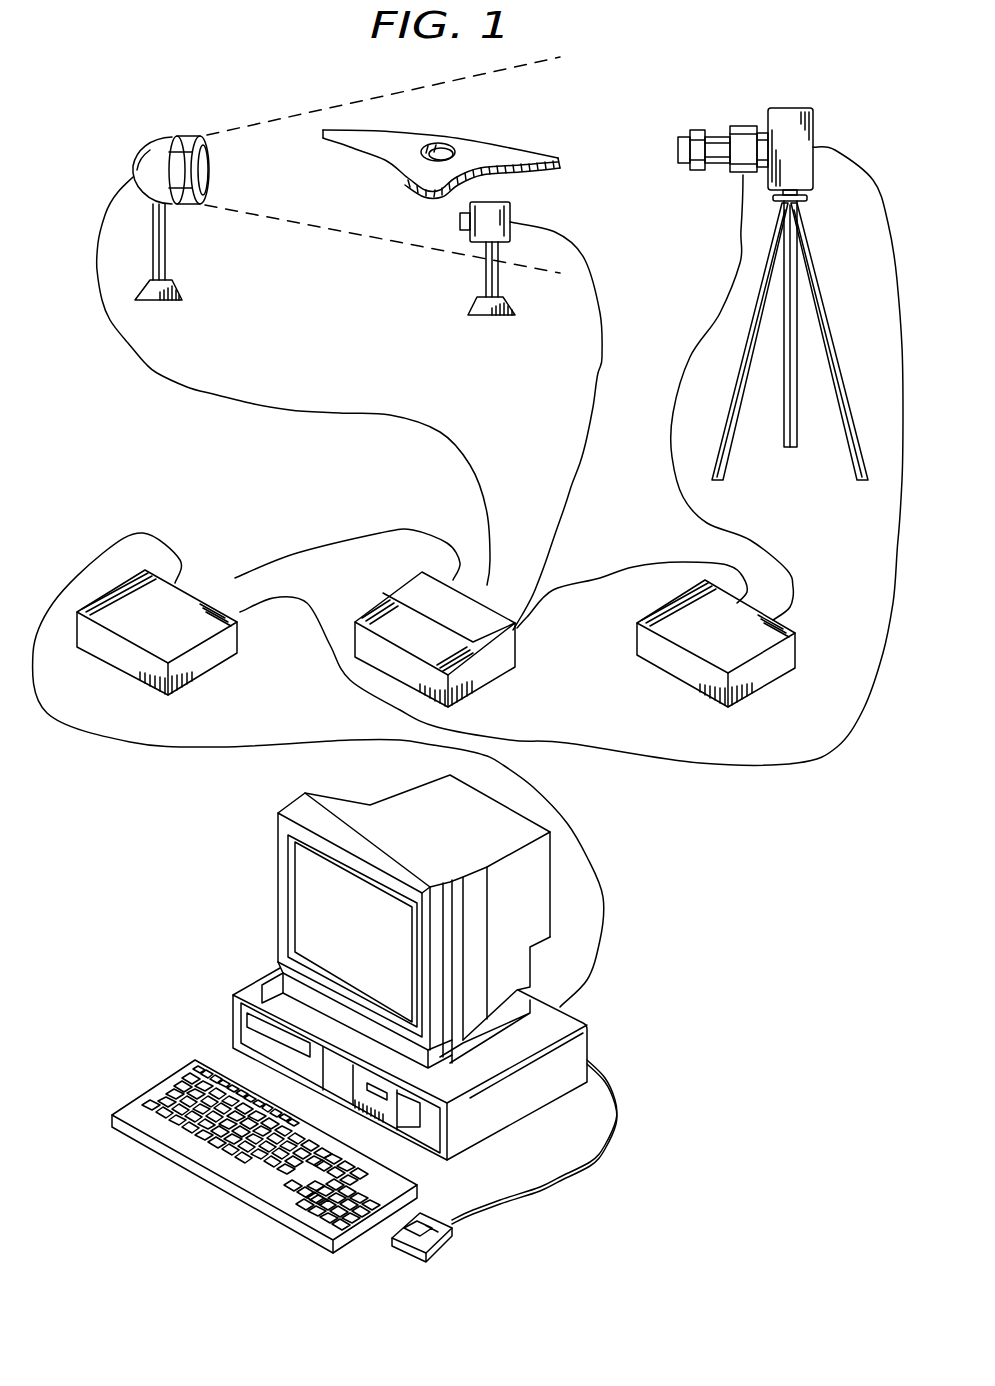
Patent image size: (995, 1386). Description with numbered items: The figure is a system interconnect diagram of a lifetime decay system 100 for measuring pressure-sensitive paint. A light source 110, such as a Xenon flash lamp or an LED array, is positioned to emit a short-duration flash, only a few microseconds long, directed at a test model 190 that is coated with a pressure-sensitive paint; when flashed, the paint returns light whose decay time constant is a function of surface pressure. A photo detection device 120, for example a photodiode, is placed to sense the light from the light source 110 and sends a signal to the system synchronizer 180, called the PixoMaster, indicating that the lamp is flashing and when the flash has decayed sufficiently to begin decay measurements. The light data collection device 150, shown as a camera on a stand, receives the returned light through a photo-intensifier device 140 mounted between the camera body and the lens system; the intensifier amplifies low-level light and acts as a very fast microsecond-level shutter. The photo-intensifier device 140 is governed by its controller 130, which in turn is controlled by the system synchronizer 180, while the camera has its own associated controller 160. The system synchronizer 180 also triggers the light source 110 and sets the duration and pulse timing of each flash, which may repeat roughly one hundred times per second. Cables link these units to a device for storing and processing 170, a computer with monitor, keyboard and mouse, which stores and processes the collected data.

The lifetime decay system 100 is at (645, 54).
The light source 110 is at (162, 142).
The photo detection device 120 is at (512, 213).
The photo intensifier controller 130 is at (777, 672).
The photo-intensifier device 140 is at (740, 130).
The light data collection device 150 is at (790, 112).
The controller 160 is at (123, 663).
The device for storing and processing 170 is at (232, 1020).
The system synchronizer 180 is at (488, 673).
The test model 190 is at (498, 142).